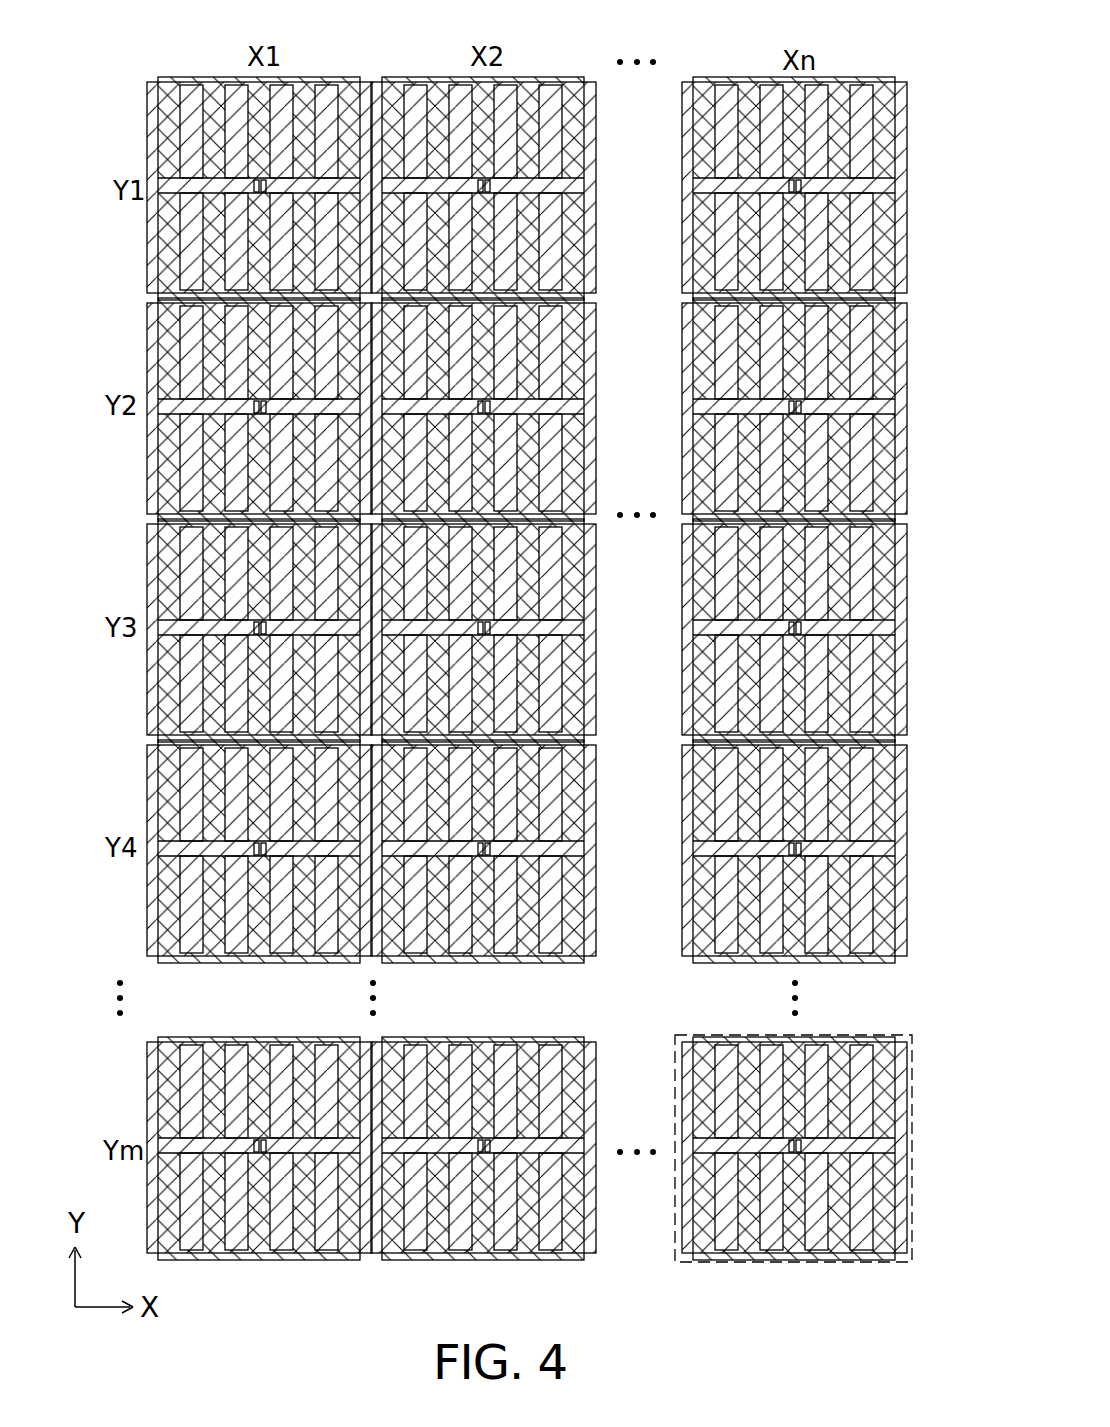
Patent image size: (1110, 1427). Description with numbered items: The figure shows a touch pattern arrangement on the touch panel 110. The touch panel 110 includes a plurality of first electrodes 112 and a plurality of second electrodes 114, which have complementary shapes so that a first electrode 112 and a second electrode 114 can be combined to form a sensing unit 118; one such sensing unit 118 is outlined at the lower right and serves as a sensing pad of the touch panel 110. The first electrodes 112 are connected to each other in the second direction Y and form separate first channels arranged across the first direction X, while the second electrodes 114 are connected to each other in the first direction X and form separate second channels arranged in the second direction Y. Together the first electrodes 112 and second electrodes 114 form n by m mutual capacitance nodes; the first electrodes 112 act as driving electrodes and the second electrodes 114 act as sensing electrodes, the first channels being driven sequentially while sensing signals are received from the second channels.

The touch panel 110 is at (854, 47).
The first electrode 112 is at (702, 97).
The second electrode 114 is at (326, 92).
The sensing unit 118 is at (808, 1265).